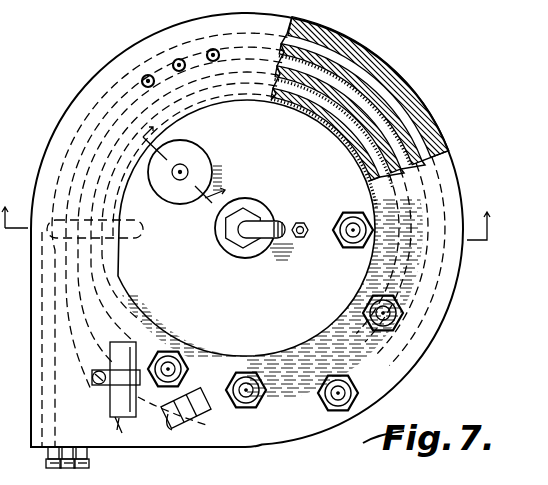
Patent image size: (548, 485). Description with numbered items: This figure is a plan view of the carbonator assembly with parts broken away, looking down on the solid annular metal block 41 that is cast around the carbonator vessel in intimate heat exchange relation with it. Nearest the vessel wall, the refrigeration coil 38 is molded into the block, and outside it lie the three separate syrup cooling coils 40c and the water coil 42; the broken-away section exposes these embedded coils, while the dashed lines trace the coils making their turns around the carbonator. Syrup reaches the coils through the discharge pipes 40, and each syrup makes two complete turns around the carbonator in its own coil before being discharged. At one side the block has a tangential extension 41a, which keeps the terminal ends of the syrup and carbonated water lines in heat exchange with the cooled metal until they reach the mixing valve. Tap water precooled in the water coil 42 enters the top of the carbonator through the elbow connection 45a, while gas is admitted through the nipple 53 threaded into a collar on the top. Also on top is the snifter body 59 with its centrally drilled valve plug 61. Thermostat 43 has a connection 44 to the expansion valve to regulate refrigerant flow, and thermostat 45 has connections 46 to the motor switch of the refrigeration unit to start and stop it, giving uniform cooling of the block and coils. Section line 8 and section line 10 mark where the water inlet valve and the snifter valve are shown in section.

The section line 8- 8 is at (249, 230).
The section line 10- 10 is at (173, 174).
The refrigeration coil 38 is at (313, 107).
The discharge pipe 40 is at (77, 484).
The cooling coil 40c is at (207, 54).
The metal block 41 is at (452, 288).
The tangential extension 41a is at (33, 424).
The water coil 42 is at (388, 112).
The thermostat 43 is at (212, 425).
The connection 44 is at (186, 418).
The thermostat 45 is at (115, 396).
The elbow connection 45a is at (265, 224).
The connections 46 is at (116, 422).
The nipple 53 is at (352, 212).
The snifter body 59 is at (206, 163).
The valve plug 61 is at (181, 165).